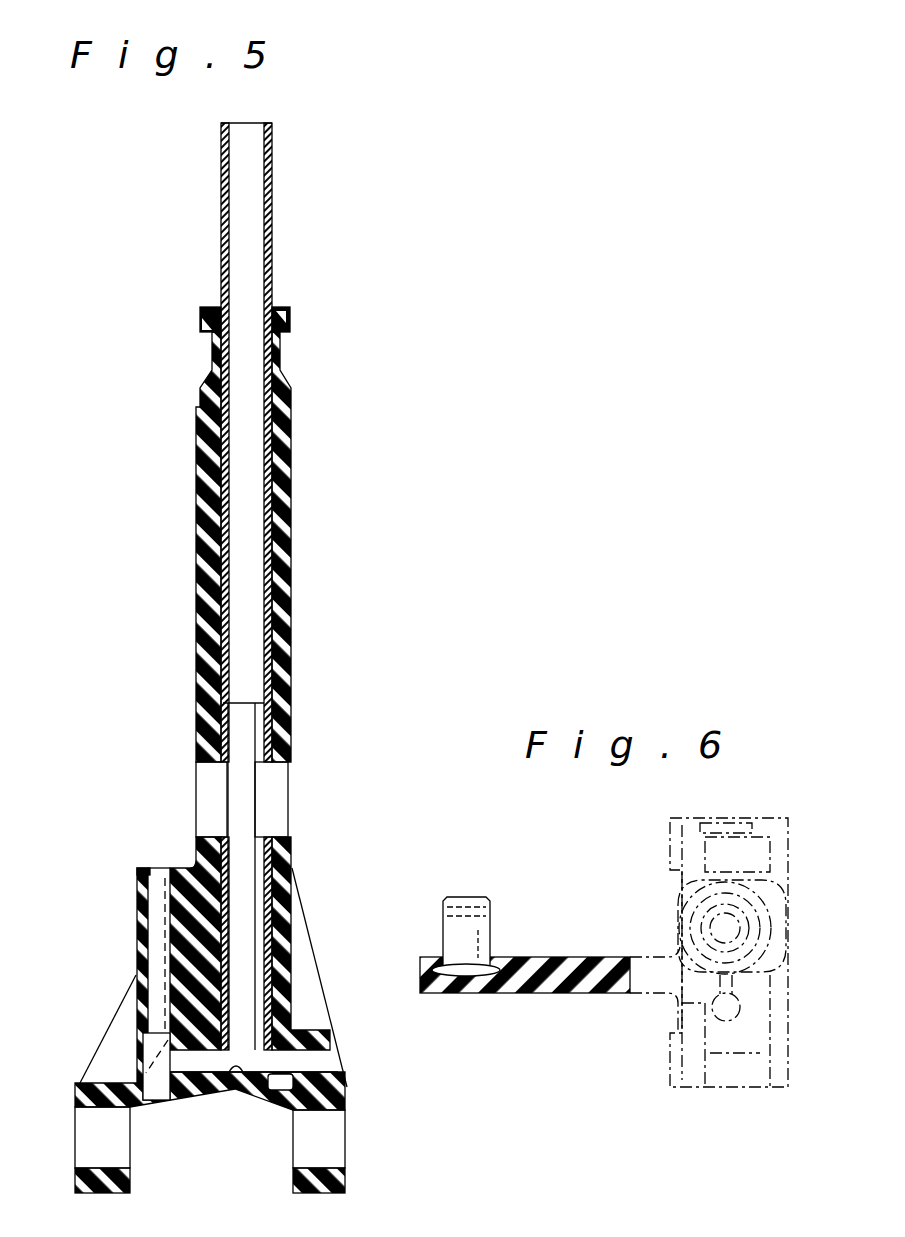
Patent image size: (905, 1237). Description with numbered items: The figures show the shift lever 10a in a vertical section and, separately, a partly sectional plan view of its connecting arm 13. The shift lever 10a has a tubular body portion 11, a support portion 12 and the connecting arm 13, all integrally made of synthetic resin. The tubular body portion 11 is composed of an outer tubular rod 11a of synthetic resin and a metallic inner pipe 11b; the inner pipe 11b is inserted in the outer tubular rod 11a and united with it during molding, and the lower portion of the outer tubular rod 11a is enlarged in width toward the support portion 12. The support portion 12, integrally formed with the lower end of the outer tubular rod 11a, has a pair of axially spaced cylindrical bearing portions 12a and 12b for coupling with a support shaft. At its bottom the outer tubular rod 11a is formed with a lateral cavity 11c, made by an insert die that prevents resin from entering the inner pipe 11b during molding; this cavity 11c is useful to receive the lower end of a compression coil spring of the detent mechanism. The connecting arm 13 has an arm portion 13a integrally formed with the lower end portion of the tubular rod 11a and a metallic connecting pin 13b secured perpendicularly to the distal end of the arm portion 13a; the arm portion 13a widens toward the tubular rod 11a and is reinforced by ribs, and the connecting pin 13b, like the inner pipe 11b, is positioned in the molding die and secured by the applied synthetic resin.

In FIG. 5, the shift lever 10a is at (178, 615).
In FIG. 6, the shift lever 10a is at (798, 913).
In FIG. 5, the tubular body portion 11 is at (293, 455).
In FIG. 5, the outer tubular rod 11a is at (200, 450).
In FIG. 5, the inner pipe 11b is at (221, 256).
In FIG. 5, the lateral cavity 11c is at (242, 1082).
In FIG. 5, the support portion 12 is at (100, 1082).
In FIG. 5, the cylindrical bearing portion 12a is at (80, 1172).
In FIG. 5, the cylindrical bearing portion 12b is at (342, 1188).
In FIG. 6, the connecting arm 13 is at (568, 990).
In FIG. 6, the arm portion 13a is at (560, 975).
In FIG. 6, the connecting pin 13b is at (472, 907).